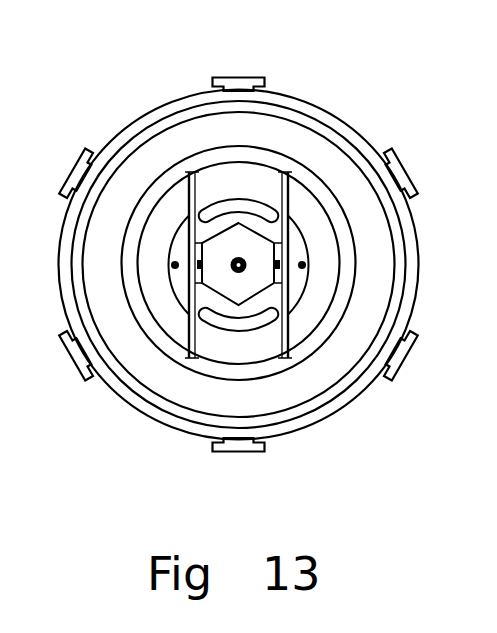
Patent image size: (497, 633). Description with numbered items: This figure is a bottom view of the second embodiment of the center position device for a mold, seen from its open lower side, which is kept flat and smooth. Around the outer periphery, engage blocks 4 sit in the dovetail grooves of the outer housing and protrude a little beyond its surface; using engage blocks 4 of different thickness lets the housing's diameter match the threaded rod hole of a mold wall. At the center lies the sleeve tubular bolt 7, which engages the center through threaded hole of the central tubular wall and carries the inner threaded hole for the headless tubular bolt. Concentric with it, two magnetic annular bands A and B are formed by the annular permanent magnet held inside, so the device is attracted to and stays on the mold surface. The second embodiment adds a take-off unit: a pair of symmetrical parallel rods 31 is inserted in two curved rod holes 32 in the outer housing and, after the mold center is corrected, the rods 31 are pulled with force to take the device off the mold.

The engage block 4 is at (239, 77).
The sleeve tubular bolt 7 is at (222, 286).
The parallel rod 31 is at (189, 173).
The curved rod hole 32 is at (250, 210).
The magnetic annular band A is at (306, 101).
The magnetic annular band B is at (320, 187).